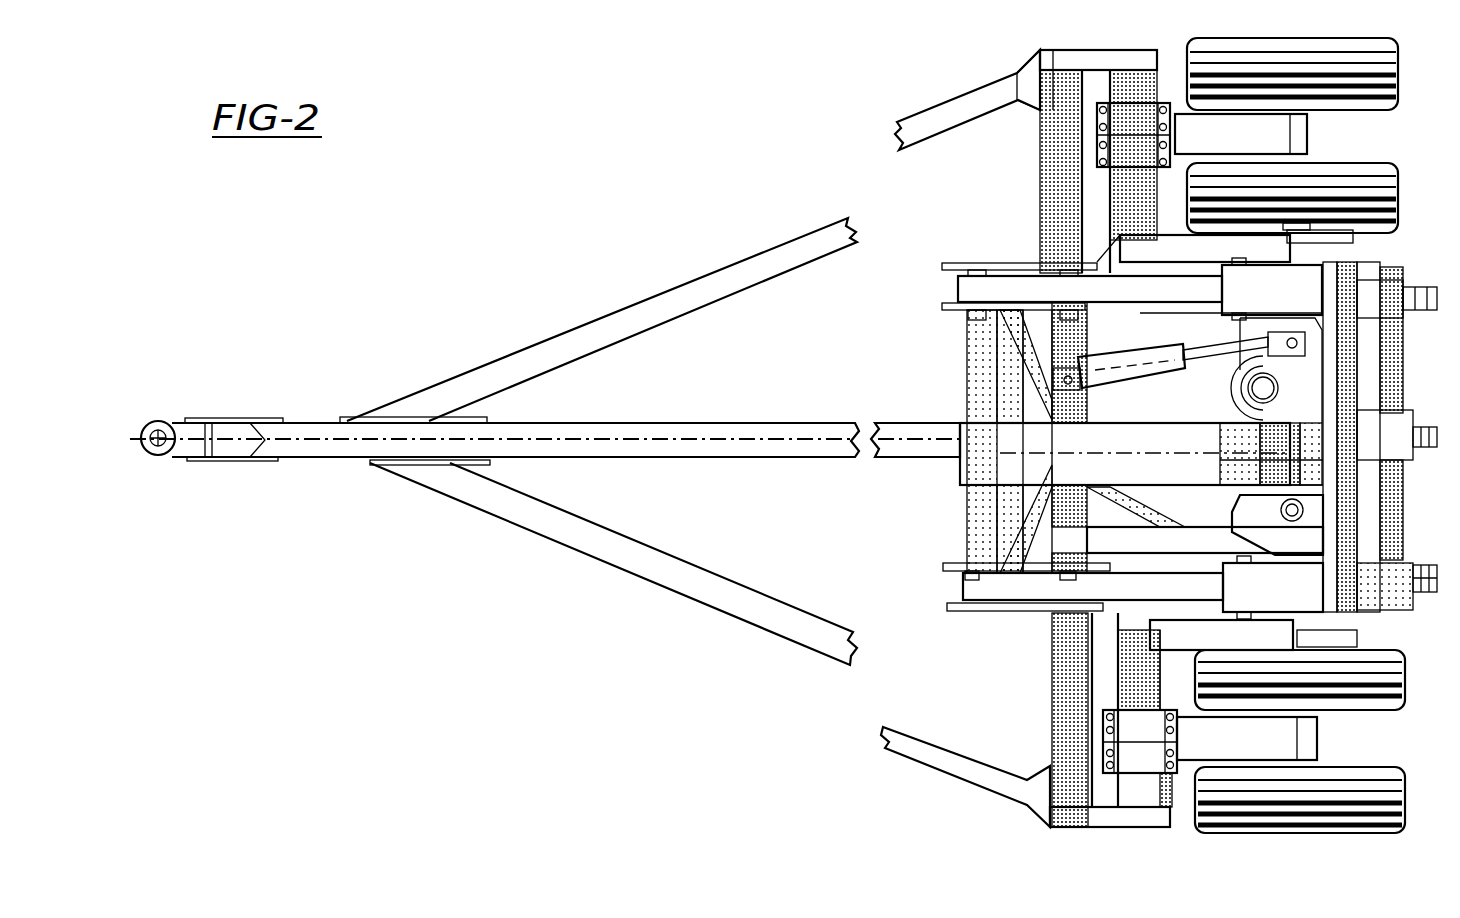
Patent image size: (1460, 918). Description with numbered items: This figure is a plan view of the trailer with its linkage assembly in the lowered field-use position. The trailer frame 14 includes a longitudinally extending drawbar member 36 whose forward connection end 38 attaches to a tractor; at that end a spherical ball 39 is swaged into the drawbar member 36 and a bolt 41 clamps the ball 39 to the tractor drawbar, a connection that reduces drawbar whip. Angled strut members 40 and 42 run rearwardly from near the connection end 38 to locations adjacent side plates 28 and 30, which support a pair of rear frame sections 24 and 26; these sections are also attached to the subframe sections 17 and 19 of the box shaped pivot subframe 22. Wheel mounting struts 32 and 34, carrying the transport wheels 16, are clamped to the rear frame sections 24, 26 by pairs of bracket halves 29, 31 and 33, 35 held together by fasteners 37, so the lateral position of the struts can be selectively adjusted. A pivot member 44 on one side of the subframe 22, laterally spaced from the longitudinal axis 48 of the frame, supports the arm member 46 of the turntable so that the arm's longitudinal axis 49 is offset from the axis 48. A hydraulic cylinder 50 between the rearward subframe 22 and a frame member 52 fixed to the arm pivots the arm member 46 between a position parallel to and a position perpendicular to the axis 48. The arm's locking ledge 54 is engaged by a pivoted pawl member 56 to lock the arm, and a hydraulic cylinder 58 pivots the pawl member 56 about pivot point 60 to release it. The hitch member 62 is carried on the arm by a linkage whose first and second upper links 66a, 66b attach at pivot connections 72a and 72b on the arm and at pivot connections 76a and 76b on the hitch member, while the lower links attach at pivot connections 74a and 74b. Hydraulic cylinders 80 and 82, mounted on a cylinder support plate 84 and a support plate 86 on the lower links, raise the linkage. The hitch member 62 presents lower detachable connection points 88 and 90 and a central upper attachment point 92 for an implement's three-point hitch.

The trailer frame 14 is at (476, 384).
The transport wheels 16 is at (1365, 105).
The subframe section 17 is at (1172, 332).
The subframe section 19 is at (1180, 565).
The pivot subframe 22 is at (1100, 328).
The rear frame section 24 is at (1130, 62).
The rear frame section 26 is at (1107, 717).
The side plate 28 is at (1115, 56).
The bracket half 29 is at (1195, 138).
The side plate 30 is at (1110, 838).
The bracket half 31 is at (1127, 107).
The wheel mounting strut 32 is at (1145, 75).
The bracket half 33 is at (1205, 733).
The wheel mounting strut 34 is at (1180, 775).
The bracket half 35 is at (1125, 800).
The drawbar member 36 is at (606, 458).
The fasteners 37 is at (1098, 162).
The forward connection end 38 is at (168, 418).
The spherical ball 39 is at (172, 447).
The angled strut member 40 is at (856, 236).
The bolt 41 is at (152, 456).
The angled strut member 42 is at (856, 650).
The pivot member 44 is at (1252, 386).
The arm member 46 is at (1170, 488).
The longitudinal axis 48 is at (716, 460).
The longitudinal axis 49 is at (1000, 476).
The hydraulic cylinder 50 is at (1170, 365).
The frame member 52 is at (997, 390).
The locking ledge 54 is at (1265, 487).
The pawl member 56 is at (1330, 545).
The hydraulic cylinder 58 is at (1320, 478).
The pivot point 60 is at (1305, 510).
The hitch member 62 is at (1395, 352).
The first upper link 66a is at (1062, 615).
The second upper link 66b is at (1080, 258).
The pivot connection 72a is at (962, 610).
The pivot connection 72b is at (968, 265).
The pivot connection 74a is at (1066, 612).
The pivot connection 74b is at (1066, 256).
The pivot connection 76a is at (1245, 622).
The pivot connection 76b is at (1258, 240).
The hydraulic cylinder 80 is at (1175, 650).
The hydraulic cylinder 82 is at (1172, 230).
The cylinder support plate 84 is at (1125, 635).
The support plate 86 is at (1118, 268).
The lower detachable connection point 88 is at (1425, 588).
The lower detachable connection point 90 is at (1430, 285).
The upper detachable attachment point 92 is at (1430, 425).